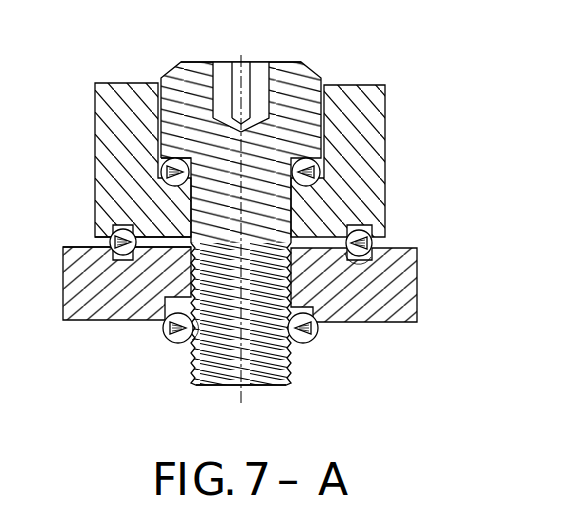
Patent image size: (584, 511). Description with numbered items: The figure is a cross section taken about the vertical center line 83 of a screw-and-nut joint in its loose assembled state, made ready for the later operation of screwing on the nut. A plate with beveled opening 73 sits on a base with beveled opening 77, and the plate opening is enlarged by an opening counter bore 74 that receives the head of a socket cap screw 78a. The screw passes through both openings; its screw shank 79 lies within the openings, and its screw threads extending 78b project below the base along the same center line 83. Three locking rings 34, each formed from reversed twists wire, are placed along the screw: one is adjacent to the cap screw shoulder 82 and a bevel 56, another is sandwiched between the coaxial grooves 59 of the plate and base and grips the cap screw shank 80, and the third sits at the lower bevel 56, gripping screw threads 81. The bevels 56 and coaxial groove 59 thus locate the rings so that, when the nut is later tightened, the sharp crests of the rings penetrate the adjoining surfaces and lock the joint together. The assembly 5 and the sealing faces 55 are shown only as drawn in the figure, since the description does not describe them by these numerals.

The fastener assembly 5 is at (7, 370).
The locking ring 34 is at (325, 177).
The sealing face 55 is at (150, 215).
The bevels 56 is at (158, 178).
The coaxial groove 59 is at (362, 205).
The plate with beveled opening 73 is at (110, 107).
The opening counter bore 74 is at (130, 100).
The base with beveled opening 77 is at (65, 320).
The socket cap screw 78a is at (290, 60).
The screw threads extending 78b is at (203, 378).
The screw shank 79 is at (276, 155).
The cap screw shank 80 is at (335, 100).
The gripping screw threads 81 is at (195, 352).
The cap screw shoulder 82 is at (177, 157).
The openings and screw vertical center line 83 is at (243, 400).